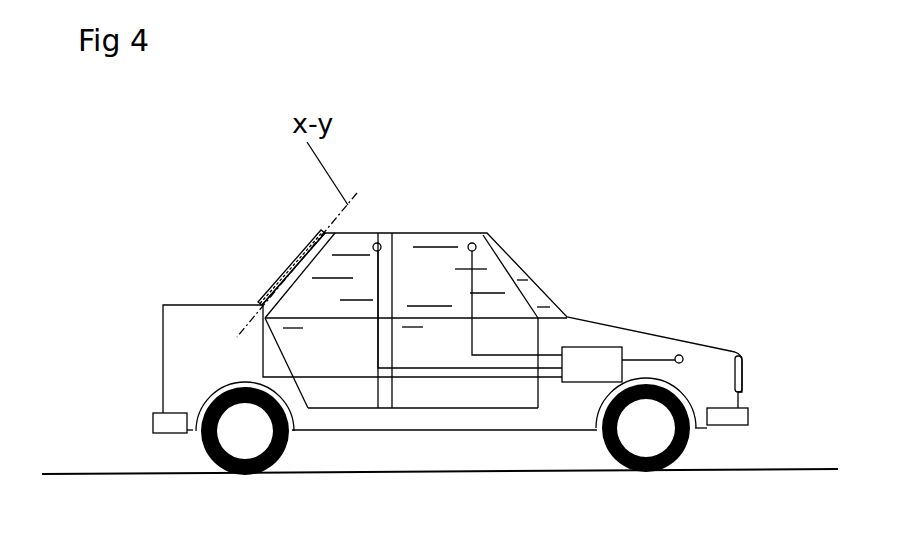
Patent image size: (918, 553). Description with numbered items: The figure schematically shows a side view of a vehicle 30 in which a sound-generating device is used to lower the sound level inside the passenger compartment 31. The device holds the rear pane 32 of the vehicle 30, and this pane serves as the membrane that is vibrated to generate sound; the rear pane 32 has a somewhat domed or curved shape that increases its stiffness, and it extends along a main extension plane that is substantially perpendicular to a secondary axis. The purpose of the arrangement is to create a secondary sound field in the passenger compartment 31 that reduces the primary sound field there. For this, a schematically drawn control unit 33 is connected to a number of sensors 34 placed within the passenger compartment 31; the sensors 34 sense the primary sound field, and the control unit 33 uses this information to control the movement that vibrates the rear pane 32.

The vehicle 30 is at (204, 219).
The passenger compartment 31 is at (446, 289).
The rear pane 32 is at (311, 243).
The control unit 33 is at (605, 362).
The sensors 34 is at (472, 243).